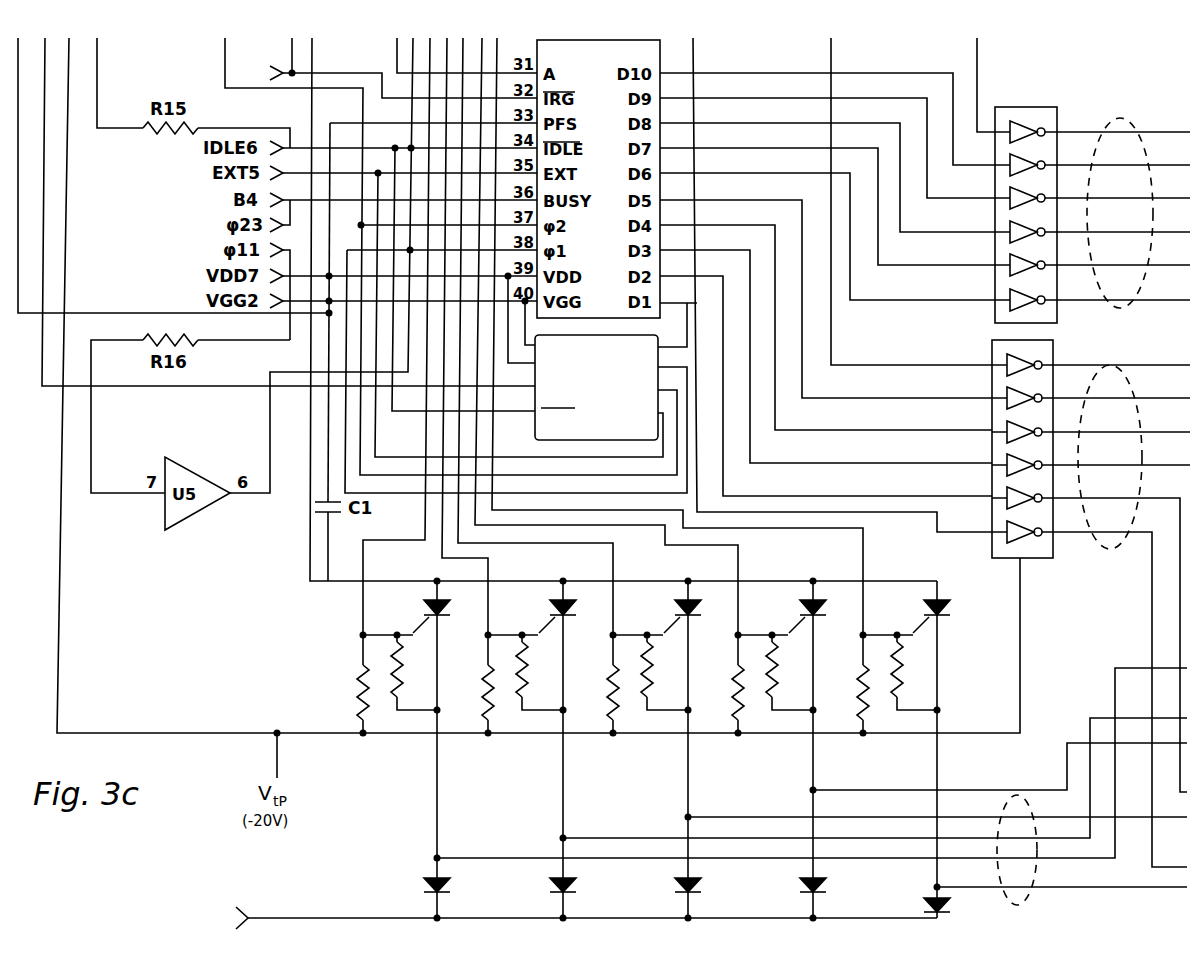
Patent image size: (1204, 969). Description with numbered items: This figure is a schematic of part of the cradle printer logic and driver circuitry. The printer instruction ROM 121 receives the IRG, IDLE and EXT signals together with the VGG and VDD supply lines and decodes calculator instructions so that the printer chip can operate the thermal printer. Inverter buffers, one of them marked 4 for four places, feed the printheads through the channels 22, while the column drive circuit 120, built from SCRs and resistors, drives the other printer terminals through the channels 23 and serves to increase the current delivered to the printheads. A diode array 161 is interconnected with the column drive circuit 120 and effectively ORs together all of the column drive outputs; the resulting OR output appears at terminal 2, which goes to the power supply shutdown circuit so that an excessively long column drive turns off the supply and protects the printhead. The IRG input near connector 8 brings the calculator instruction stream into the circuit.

The terminal 2 is at (238, 904).
The inverter (4 places) 4 is at (1079, 603).
The IRG connector 8 is at (383, 66).
The channels 22 is at (1104, 368).
The channels 23 is at (1006, 787).
The column drive circuit 120 is at (657, 783).
The printer instruction ROM 121 is at (611, 392).
The diode array 161 is at (670, 947).